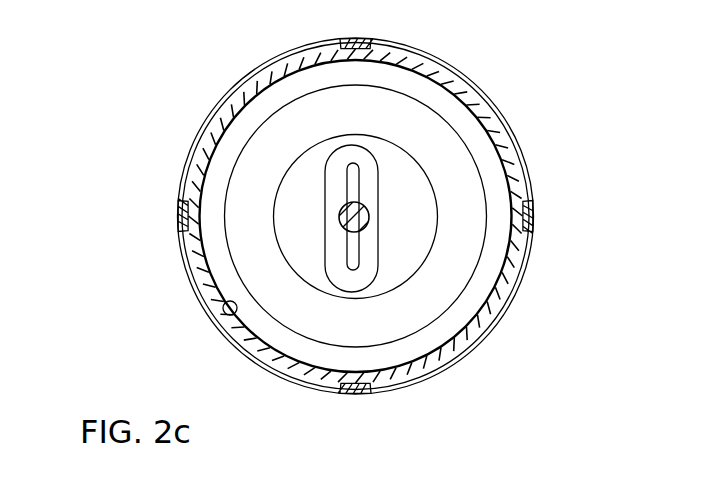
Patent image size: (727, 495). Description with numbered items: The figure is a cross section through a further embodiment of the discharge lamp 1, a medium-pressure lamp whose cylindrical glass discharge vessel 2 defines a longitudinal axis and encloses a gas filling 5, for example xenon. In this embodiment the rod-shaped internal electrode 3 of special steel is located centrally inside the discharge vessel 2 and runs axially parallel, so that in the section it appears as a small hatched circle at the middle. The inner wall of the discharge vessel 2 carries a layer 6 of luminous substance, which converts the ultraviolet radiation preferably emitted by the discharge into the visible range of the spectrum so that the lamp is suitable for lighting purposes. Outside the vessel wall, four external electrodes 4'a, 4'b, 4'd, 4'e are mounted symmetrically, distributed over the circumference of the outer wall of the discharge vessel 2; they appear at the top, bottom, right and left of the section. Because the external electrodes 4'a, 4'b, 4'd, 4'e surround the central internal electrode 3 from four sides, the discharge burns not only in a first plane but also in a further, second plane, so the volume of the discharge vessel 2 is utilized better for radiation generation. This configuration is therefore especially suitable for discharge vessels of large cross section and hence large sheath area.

The discharge lamp 1 is at (202, 93).
The discharge vessel 2 is at (196, 258).
The internal electrode 3 is at (365, 228).
The gas filling 5 is at (450, 258).
The layer of luminous substance 6 is at (226, 325).
The external electrode 4'a is at (428, 25).
The external electrode 4'b is at (409, 416).
The external electrode 4'd is at (586, 212).
The external electrode 4'e is at (120, 209).